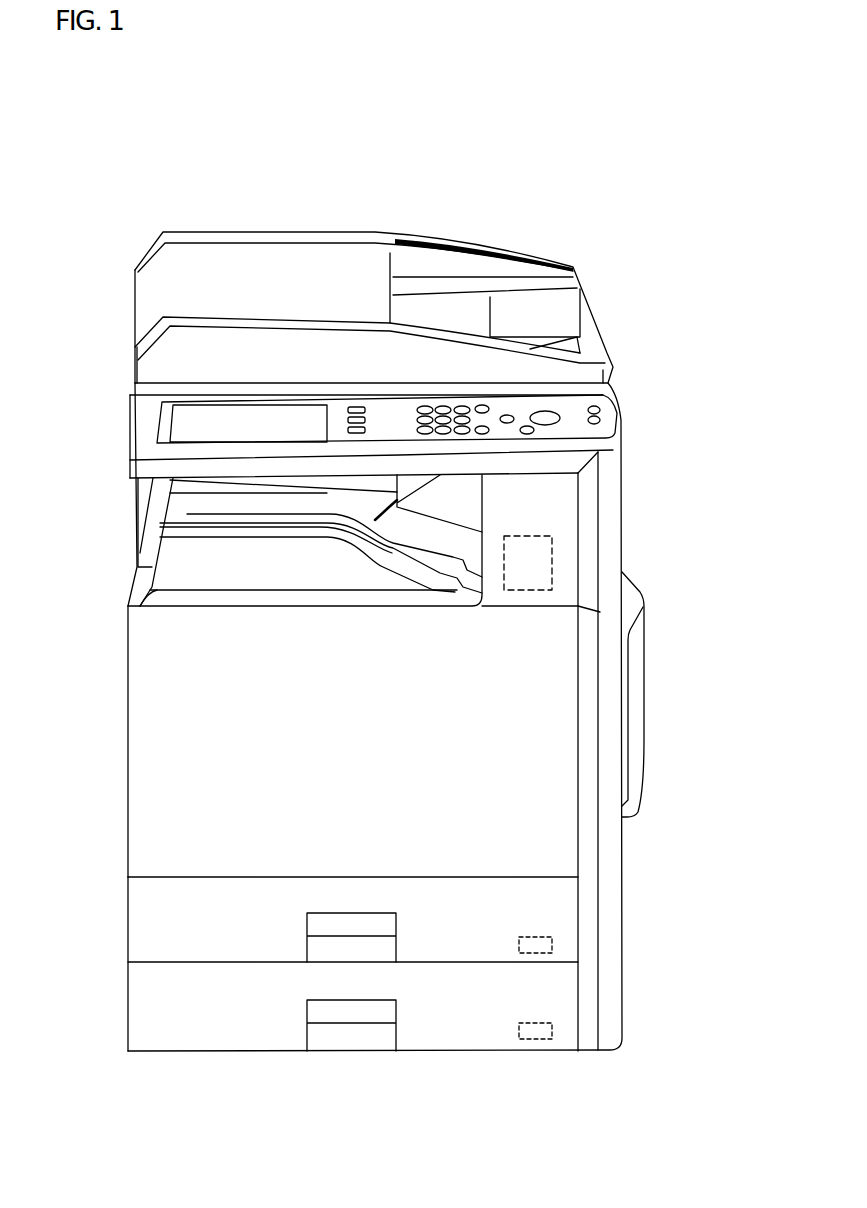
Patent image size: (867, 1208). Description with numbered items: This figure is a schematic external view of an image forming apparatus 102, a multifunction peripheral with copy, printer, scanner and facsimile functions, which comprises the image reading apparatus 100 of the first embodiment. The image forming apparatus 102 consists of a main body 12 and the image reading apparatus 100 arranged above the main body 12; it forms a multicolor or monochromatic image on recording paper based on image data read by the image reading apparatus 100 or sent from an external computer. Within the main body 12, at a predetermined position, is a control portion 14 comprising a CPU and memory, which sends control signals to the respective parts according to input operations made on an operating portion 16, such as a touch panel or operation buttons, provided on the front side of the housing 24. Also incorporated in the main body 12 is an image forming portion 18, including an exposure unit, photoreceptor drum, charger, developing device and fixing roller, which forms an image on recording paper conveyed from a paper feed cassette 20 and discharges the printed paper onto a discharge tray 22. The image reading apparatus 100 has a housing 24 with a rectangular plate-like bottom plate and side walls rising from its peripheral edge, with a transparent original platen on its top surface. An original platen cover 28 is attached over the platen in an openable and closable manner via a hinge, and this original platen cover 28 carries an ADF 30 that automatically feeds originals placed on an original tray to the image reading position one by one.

The image forming apparatus 102 is at (162, 128).
The image reading apparatus 100 is at (632, 400).
The main body 12 is at (642, 577).
The control portion 14 is at (543, 563).
The operating portion 16 is at (190, 424).
The image forming portion 18 is at (157, 758).
The paper feed cassette 20 is at (157, 927).
The discharge tray 22 is at (193, 508).
The housing 24 is at (610, 384).
The original platen cover 28 is at (592, 344).
The ADF (automatic document feeder) 30 is at (285, 266).